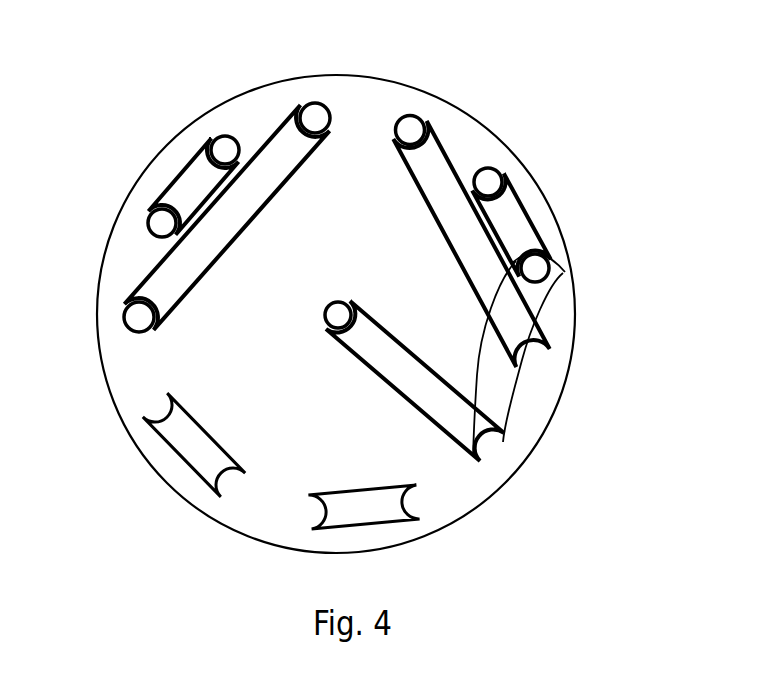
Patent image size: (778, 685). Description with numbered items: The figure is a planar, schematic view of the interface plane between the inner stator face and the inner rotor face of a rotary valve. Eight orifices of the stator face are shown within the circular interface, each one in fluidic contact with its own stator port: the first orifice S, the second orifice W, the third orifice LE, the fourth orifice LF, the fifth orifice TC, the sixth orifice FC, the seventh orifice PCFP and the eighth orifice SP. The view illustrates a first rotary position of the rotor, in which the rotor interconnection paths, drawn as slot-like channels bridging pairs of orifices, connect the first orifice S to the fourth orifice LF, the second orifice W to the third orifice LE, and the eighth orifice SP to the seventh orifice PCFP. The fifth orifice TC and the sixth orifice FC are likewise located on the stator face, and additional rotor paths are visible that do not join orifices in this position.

The fourth orifice LF is at (311, 104).
The third orifice LE is at (212, 150).
The second orifice W is at (148, 227).
The first orifice S is at (125, 320).
The fifth orifice TC is at (412, 116).
The sixth orifice FC is at (503, 175).
The seventh orifice PCFP is at (563, 272).
The eighth orifice SP is at (332, 328).